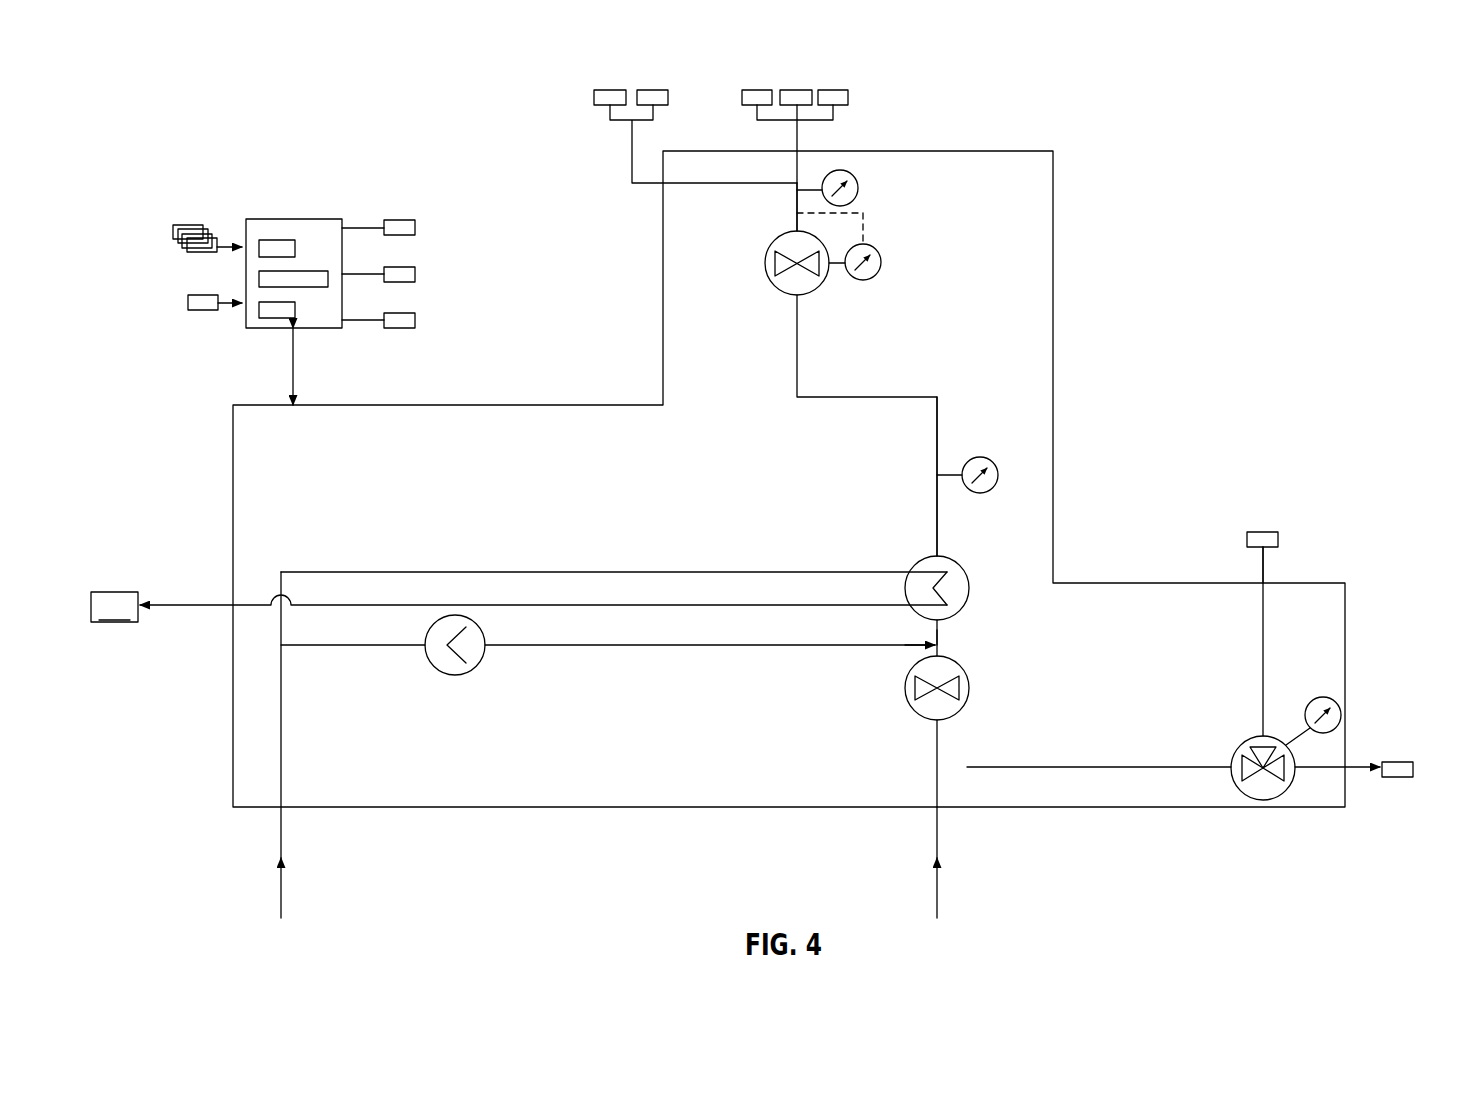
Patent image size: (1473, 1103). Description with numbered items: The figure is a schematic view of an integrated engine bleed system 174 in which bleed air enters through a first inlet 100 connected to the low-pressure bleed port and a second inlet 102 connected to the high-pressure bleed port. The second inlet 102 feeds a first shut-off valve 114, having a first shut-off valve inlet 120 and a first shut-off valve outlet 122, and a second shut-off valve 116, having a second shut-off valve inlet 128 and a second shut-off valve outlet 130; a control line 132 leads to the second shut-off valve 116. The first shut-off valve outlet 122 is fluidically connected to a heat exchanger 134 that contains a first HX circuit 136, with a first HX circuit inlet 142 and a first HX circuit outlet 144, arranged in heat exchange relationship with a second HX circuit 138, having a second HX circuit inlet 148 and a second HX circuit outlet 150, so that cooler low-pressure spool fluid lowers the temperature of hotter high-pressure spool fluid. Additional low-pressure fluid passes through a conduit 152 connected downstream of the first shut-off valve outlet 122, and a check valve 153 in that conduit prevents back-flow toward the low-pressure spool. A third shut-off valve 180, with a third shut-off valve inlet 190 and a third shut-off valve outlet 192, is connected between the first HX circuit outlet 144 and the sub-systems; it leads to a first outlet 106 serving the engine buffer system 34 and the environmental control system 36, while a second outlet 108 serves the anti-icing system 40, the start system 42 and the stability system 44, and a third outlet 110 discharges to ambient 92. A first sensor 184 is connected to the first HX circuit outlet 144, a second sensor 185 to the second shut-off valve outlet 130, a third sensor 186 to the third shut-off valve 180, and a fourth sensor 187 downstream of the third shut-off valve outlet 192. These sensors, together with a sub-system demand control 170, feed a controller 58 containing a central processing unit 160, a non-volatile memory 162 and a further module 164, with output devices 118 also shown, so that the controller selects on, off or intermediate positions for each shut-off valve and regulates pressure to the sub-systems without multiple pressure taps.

The engine buffer system 34 is at (608, 89).
The environmental control system 36 is at (655, 89).
The anti-icing system 40 is at (754, 107).
The start system 42 is at (794, 89).
The stability system 44 is at (833, 89).
The controller 58 is at (258, 215).
The ambient 92 is at (1407, 760).
The first inlet 100 is at (284, 878).
The second inlet 102 is at (939, 884).
The first outlet 106 is at (631, 144).
The second outlet 108 is at (803, 140).
The third outlet 110 is at (1266, 568).
The first shut-off valve 114 is at (942, 710).
The second shut-off valve 116 is at (395, 228).
The output device 118 is at (422, 274).
The first shut-off valve inlet 120 is at (936, 728).
The first shut-off valve outlet 122 is at (930, 648).
The second shut-off valve inlet 128 is at (1193, 767).
The second shut-off valve outlet 130 is at (1296, 782).
The valve stem / control line 132 is at (1258, 737).
The heat exchanger 134 is at (950, 546).
The first HX circuit 136 is at (944, 638).
The second HX circuit 138 is at (951, 586).
The first HX circuit inlet 142 is at (953, 623).
The first HX circuit outlet 144 is at (935, 557).
The second HX circuit inlet 148 is at (907, 572).
The second HX circuit outlet 150 is at (908, 611).
The conduit 152 is at (553, 648).
The check valve 153 is at (458, 676).
The central processing unit 160 is at (276, 243).
The non-volatile memory 162 is at (318, 287).
The communication module 164 is at (277, 316).
The sub-system demand control 170 is at (202, 310).
The integrated engine bleed system 174 is at (222, 494).
The third shut-off valve 180 is at (806, 296).
The first sensor 184 is at (183, 225).
The second sensor 185 is at (185, 243).
The third sensor 186 is at (192, 250).
The fourth sensor 187 is at (197, 252).
The third shut-off valve inlet 190 is at (793, 306).
The third shut-off valve outlet 192 is at (793, 230).